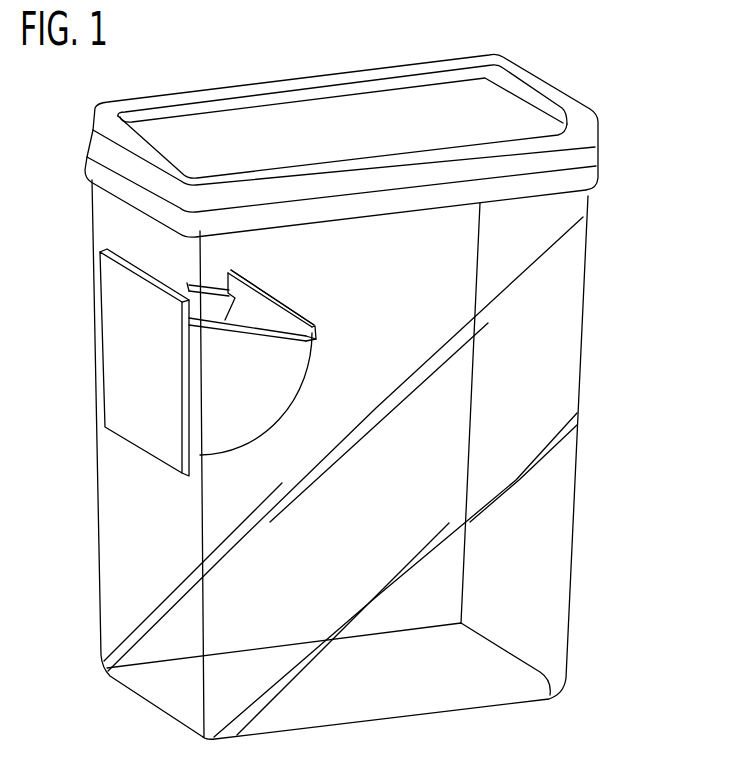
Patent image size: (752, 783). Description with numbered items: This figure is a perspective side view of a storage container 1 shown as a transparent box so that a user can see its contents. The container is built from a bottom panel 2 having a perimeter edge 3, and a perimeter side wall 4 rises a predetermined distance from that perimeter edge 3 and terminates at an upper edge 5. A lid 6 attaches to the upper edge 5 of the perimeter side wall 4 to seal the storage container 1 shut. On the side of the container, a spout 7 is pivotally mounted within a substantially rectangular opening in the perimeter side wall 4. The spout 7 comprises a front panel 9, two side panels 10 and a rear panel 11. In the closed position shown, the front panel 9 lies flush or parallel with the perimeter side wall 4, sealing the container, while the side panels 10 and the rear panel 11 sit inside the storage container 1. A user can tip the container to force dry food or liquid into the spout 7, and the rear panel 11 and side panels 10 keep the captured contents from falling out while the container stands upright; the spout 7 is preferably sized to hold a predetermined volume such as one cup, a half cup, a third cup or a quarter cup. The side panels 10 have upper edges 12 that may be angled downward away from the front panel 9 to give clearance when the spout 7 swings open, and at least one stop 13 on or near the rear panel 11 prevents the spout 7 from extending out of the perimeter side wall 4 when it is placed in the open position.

The storage container 1 is at (652, 258).
The bottom panel 2 is at (403, 677).
The perimeter edge 3 is at (367, 719).
The perimeter side wall 4 is at (140, 503).
The upper edge 5 is at (590, 177).
The lid 6 is at (331, 139).
The spout 7 is at (227, 417).
The front panel 9 is at (140, 332).
The side panels 10 is at (211, 310).
The rear panel 11 is at (257, 319).
The upper edges 12 is at (187, 283).
The stop 13 is at (263, 283).